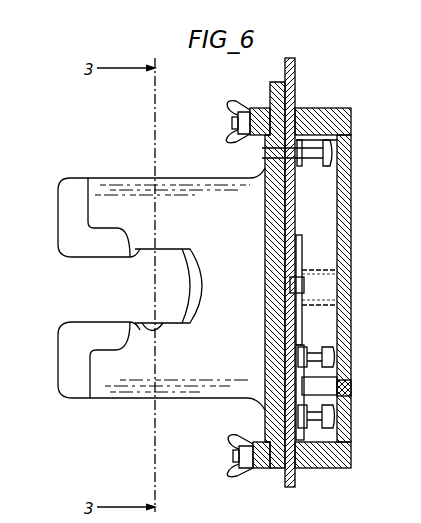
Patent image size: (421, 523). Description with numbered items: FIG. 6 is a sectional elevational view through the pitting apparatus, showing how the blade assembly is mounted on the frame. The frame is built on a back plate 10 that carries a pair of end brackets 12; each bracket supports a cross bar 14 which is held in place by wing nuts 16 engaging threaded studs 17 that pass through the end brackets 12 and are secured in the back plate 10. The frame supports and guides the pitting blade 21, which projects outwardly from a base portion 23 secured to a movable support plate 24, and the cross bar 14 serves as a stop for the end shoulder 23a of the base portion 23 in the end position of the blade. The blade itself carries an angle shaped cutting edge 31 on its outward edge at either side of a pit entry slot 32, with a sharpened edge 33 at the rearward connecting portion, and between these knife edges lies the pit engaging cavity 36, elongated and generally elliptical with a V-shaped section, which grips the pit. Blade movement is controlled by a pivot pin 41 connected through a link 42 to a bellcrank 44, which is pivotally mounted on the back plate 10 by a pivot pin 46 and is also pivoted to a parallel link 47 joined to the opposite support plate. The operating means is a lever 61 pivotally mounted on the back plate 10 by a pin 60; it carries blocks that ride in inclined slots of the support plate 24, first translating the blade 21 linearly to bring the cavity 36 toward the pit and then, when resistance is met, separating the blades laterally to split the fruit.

The back plate 10 is at (350, 235).
The end bracket 12 is at (313, 112).
The cross bar 14 is at (260, 108).
The wing nut 16 is at (232, 106).
The threaded stud 17 is at (232, 124).
The pitting blade 21 is at (197, 213).
The base portion 23 is at (262, 172).
The end shoulder 23a is at (263, 412).
The support plate 24 is at (292, 72).
The cutting edge 31 is at (76, 246).
The pit entry slot 32 is at (124, 297).
The sharpened edge 33 is at (202, 285).
The pit engaging cavity 36 is at (152, 326).
The pivot pin 41 is at (312, 160).
The link 42 is at (298, 170).
The bellcrank 44 is at (325, 343).
The pivot pin 46 is at (330, 387).
The link 47 is at (328, 352).
The pin 60 is at (337, 272).
The lever 61 is at (303, 255).